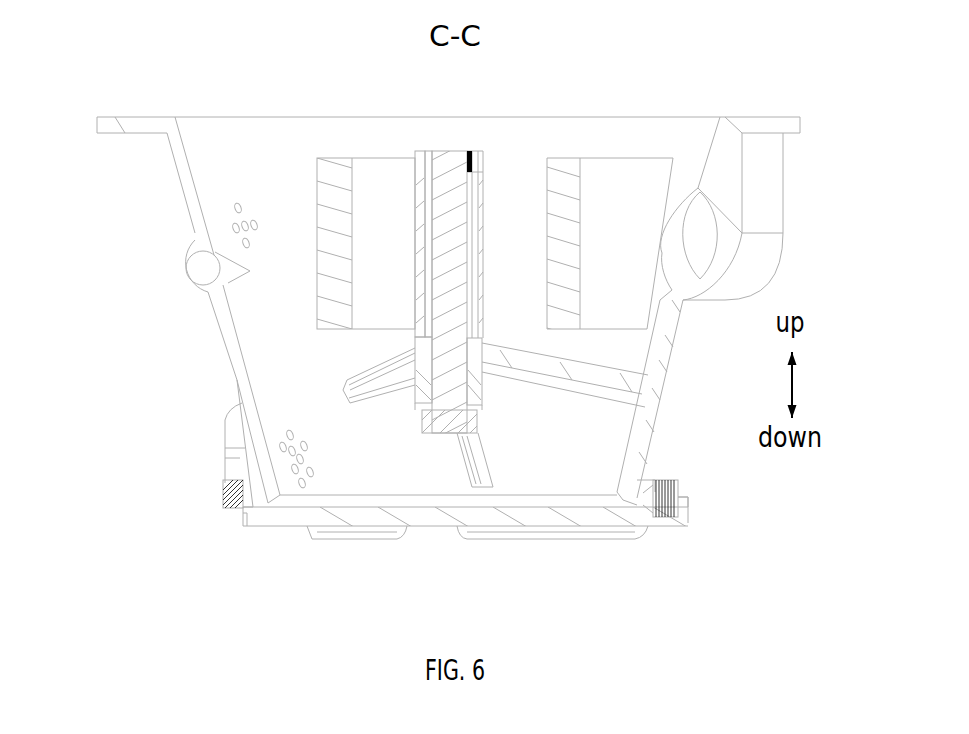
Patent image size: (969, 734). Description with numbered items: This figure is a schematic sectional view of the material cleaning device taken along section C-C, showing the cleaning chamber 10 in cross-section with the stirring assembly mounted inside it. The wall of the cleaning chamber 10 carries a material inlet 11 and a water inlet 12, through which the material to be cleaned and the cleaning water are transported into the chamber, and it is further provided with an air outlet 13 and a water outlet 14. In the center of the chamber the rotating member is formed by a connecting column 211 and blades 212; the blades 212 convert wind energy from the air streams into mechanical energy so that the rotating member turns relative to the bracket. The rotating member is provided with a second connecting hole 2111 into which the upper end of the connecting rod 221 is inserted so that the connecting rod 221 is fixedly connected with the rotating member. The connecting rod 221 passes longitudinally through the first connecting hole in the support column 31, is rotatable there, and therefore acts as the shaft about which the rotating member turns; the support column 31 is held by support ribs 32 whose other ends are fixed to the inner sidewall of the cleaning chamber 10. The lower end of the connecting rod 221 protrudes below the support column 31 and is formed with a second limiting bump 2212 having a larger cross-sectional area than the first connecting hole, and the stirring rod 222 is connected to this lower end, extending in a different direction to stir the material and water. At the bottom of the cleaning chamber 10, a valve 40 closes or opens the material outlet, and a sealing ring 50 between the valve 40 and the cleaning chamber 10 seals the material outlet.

The cleaning chamber 10 is at (663, 353).
The material inlet 11 is at (700, 245).
The water inlet 12 is at (200, 263).
The air outlet 13 is at (232, 225).
The water outlet 14 is at (295, 466).
The blade 212 is at (333, 203).
The connecting column 211 is at (420, 202).
The second connecting hole 2111 is at (428, 170).
The connecting rod 221 is at (450, 232).
The second limiting bump 2212 is at (423, 417).
The stirring rod 222 is at (475, 452).
The support column 31 is at (474, 382).
The support rib 32 is at (385, 382).
The valve 40 is at (532, 515).
The sealing ring 50 is at (663, 507).